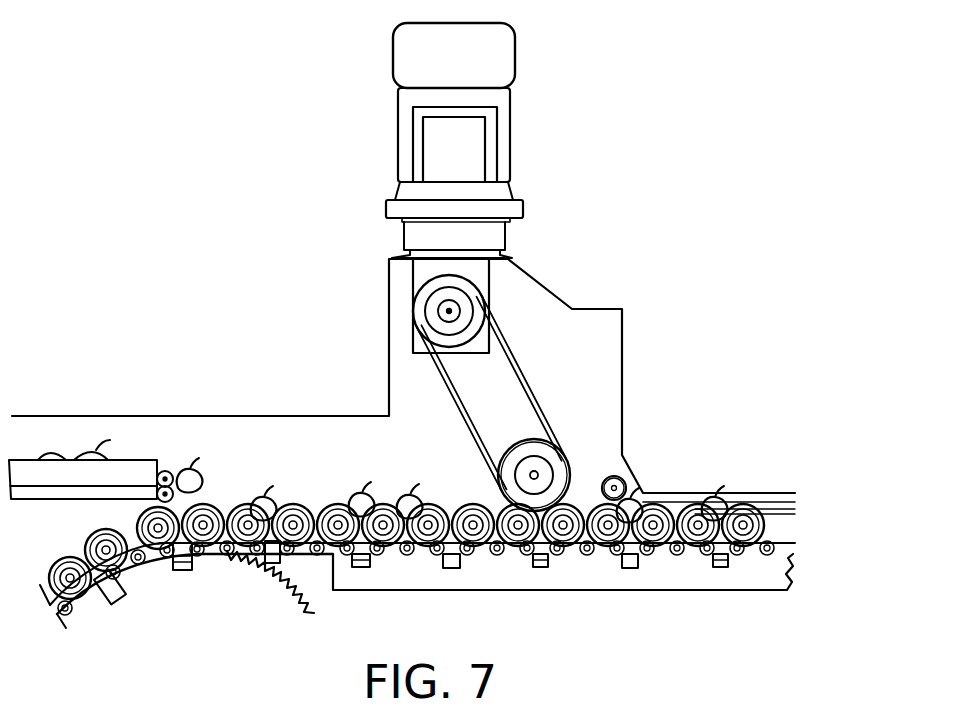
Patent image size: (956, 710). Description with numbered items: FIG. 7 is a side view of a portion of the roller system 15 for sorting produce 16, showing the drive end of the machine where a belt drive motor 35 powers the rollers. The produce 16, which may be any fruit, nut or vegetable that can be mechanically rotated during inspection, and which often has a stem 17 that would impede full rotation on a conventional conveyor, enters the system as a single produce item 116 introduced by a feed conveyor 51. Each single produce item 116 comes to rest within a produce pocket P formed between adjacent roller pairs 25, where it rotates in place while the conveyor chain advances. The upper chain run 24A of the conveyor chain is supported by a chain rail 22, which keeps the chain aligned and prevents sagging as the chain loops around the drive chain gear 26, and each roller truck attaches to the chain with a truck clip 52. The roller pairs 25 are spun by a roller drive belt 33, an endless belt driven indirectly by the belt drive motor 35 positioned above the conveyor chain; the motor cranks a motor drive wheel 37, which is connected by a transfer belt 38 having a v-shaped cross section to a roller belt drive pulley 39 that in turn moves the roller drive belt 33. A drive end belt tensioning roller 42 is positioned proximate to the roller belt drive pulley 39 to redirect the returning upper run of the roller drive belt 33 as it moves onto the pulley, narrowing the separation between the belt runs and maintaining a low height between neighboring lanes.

The roller system 15 is at (250, 312).
The produce 16 is at (55, 458).
The stem 17 is at (380, 506).
The chain rail 22 is at (565, 568).
The upper chain run 24A is at (668, 553).
The roller pair 25 is at (390, 557).
The drive chain gear 26 is at (285, 597).
The roller drive belt 33 is at (688, 503).
The belt drive motor 35 is at (504, 125).
The motor drive wheel 37 is at (417, 318).
The transfer belt 38 is at (510, 352).
The roller belt drive pulley 39 is at (553, 455).
The drive end belt tensioning roller 42 is at (635, 478).
The feed conveyor 51 is at (117, 472).
The truck clip 52 is at (453, 562).
The single produce item 116 is at (268, 506).
The produce pocket P is at (315, 505).